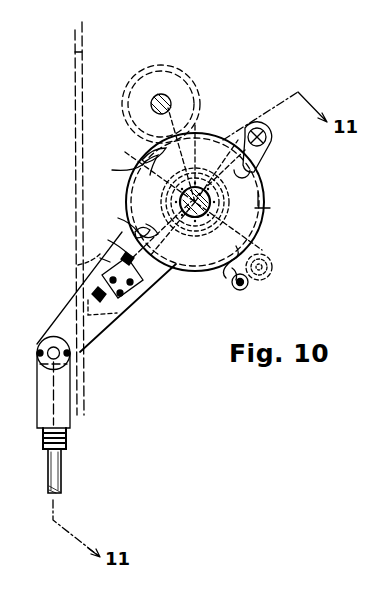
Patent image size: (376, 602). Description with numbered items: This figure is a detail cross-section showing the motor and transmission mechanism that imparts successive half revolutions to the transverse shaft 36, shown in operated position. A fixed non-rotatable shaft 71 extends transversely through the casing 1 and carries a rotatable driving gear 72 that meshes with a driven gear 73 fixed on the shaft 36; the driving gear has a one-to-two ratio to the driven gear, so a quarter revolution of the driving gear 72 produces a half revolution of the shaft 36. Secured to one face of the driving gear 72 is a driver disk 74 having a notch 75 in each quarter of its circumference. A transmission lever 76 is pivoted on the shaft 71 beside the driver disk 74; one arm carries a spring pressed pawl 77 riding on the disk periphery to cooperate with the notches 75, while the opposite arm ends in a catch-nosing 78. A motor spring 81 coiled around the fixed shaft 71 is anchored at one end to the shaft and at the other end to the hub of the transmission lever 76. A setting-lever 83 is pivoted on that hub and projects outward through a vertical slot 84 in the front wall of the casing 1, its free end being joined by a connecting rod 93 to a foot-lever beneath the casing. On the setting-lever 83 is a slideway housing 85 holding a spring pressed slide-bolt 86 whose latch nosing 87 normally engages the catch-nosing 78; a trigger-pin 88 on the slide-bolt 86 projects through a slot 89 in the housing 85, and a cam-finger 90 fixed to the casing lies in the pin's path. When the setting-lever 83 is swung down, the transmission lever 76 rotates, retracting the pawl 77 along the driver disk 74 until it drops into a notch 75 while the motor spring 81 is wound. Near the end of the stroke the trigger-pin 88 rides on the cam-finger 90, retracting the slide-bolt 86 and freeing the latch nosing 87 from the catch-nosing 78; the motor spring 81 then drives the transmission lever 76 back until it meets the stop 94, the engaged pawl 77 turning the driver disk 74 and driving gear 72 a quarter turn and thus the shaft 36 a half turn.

The casing 1 is at (76, 200).
The transverse shaft 36 is at (168, 100).
The fixed non-rotatable shaft 71 is at (195, 183).
The rotatable driving gear 72 is at (262, 198).
The driven gear 73 is at (200, 103).
The driver disk 74 is at (270, 210).
The notch 75 is at (134, 176).
The transmission lever 76 is at (238, 150).
The spring pressed pawl 77 is at (268, 152).
The catch-nosing 78 is at (142, 158).
The motor spring 81 is at (263, 230).
The setting-lever 83 is at (70, 302).
The vertical slot 84 is at (75, 156).
The slideway housing 85 is at (118, 257).
The slide-bolt 86 is at (120, 306).
The latch nosing 87 is at (116, 246).
The trigger-pin 88 is at (142, 290).
The slot 89 is at (85, 264).
The cam-finger 90 is at (137, 300).
The connecting rod 93 is at (62, 469).
The stop 94 is at (242, 290).